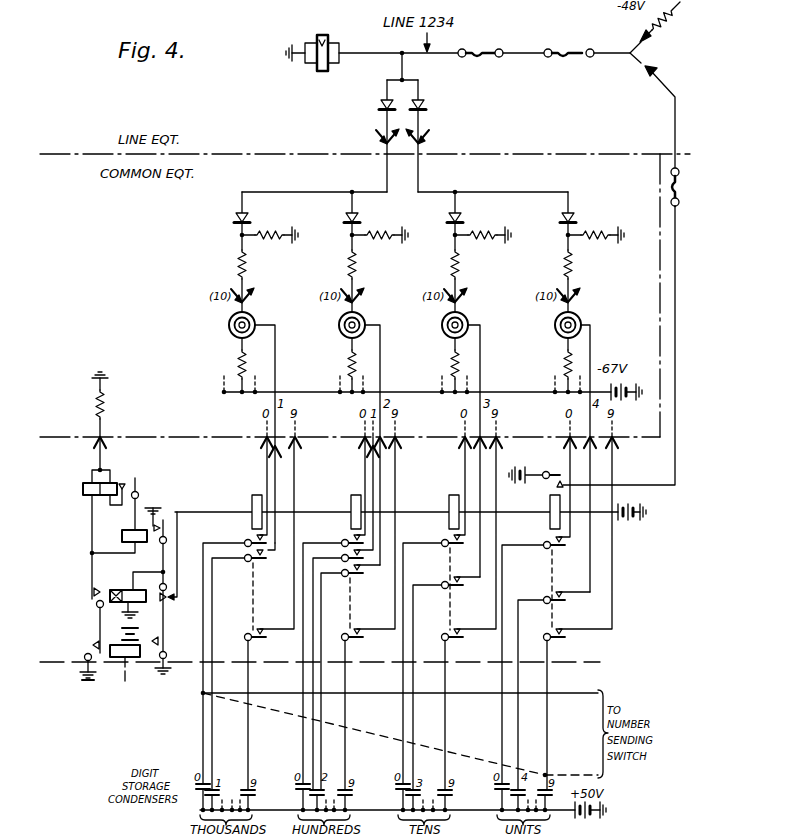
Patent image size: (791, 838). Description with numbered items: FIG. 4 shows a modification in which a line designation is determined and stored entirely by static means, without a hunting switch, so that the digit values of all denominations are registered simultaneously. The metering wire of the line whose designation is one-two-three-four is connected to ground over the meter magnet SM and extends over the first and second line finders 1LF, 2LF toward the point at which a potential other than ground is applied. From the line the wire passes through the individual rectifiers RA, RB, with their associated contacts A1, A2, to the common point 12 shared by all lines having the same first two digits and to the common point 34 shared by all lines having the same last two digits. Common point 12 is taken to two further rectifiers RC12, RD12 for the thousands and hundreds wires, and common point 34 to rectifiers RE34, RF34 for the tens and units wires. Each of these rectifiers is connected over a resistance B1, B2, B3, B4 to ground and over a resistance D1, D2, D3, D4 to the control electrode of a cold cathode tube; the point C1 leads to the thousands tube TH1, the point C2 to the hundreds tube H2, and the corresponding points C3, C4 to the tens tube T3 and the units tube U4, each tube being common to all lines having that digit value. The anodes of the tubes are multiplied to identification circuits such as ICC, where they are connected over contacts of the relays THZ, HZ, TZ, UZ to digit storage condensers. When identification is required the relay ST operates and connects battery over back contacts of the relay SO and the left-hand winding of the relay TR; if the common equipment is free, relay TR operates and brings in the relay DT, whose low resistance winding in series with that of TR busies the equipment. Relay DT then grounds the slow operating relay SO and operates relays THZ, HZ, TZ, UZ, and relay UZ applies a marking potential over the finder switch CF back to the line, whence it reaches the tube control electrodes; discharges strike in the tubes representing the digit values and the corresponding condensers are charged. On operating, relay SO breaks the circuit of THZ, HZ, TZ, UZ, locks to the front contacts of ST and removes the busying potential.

The meter magnet SM is at (321, 42).
The first line finder 1LF is at (480, 42).
The second line finder 2LF is at (569, 42).
The finder switch CF is at (684, 187).
The rectifier RA is at (376, 95).
The rectifier RB is at (427, 95).
The contact A1 is at (373, 151).
The contact A2 is at (434, 151).
The common point 12 is at (314, 184).
The common point 34 is at (493, 184).
The rectifier RC12 is at (225, 216).
The rectifier RD12 is at (335, 216).
The rectifier RE34 is at (439, 216).
The rectifier RF34 is at (552, 216).
The resistance B1 is at (270, 228).
The resistance B2 is at (380, 228).
The resistance B3 is at (483, 228).
The resistance B4 is at (596, 228).
The point C1 is at (229, 237).
The point C2 is at (339, 237).
The point C3 is at (442, 237).
The point C4 is at (555, 237).
The resistance D1 is at (253, 264).
The resistance D2 is at (363, 264).
The resistance D3 is at (466, 264).
The resistance D4 is at (579, 264).
The gas-filled tube TH1 is at (256, 321).
The cold cathode tube H2 is at (362, 321).
The cold cathode tube T3 is at (464, 321).
The cold cathode tube U4 is at (578, 321).
The relay THZ is at (262, 539).
The relay HZ is at (367, 539).
The relay TZ is at (468, 539).
The relay UZ is at (560, 539).
The relay TR is at (111, 481).
The relay DT is at (125, 529).
The slow operating relay SO is at (136, 587).
The relay ST is at (128, 642).
The identification circuit ICC is at (115, 729).